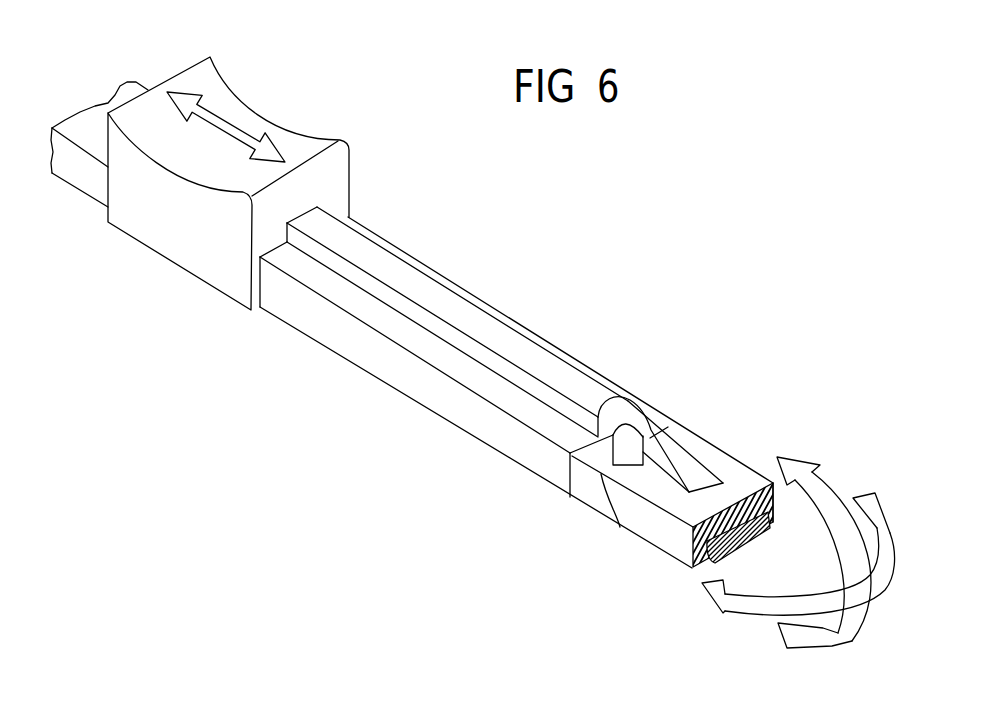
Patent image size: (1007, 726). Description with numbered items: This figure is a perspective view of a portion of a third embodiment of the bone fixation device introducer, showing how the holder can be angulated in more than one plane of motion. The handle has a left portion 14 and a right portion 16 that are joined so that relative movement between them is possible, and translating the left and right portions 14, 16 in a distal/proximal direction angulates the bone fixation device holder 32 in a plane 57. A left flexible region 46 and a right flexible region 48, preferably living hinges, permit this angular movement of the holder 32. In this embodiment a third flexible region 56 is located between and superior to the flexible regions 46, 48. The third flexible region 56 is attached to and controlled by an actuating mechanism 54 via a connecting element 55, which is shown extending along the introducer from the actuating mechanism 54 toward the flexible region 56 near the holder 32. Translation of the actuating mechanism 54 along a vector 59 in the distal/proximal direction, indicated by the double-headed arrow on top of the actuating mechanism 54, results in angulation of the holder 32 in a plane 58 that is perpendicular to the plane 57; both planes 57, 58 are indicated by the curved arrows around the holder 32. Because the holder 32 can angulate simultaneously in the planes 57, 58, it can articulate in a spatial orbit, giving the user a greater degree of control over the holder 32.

The left portion 14 is at (500, 317).
The right portion 16 is at (425, 383).
The bone fixation device holder 32 is at (737, 473).
The left flexible region 46 is at (677, 421).
The right flexible region 48 is at (585, 474).
The actuating mechanism 54 is at (343, 174).
The connecting element 55 is at (402, 273).
The third flexible region 56 is at (640, 414).
The plane 57 is at (748, 605).
The plane 58 is at (828, 497).
The vector 59 is at (232, 118).